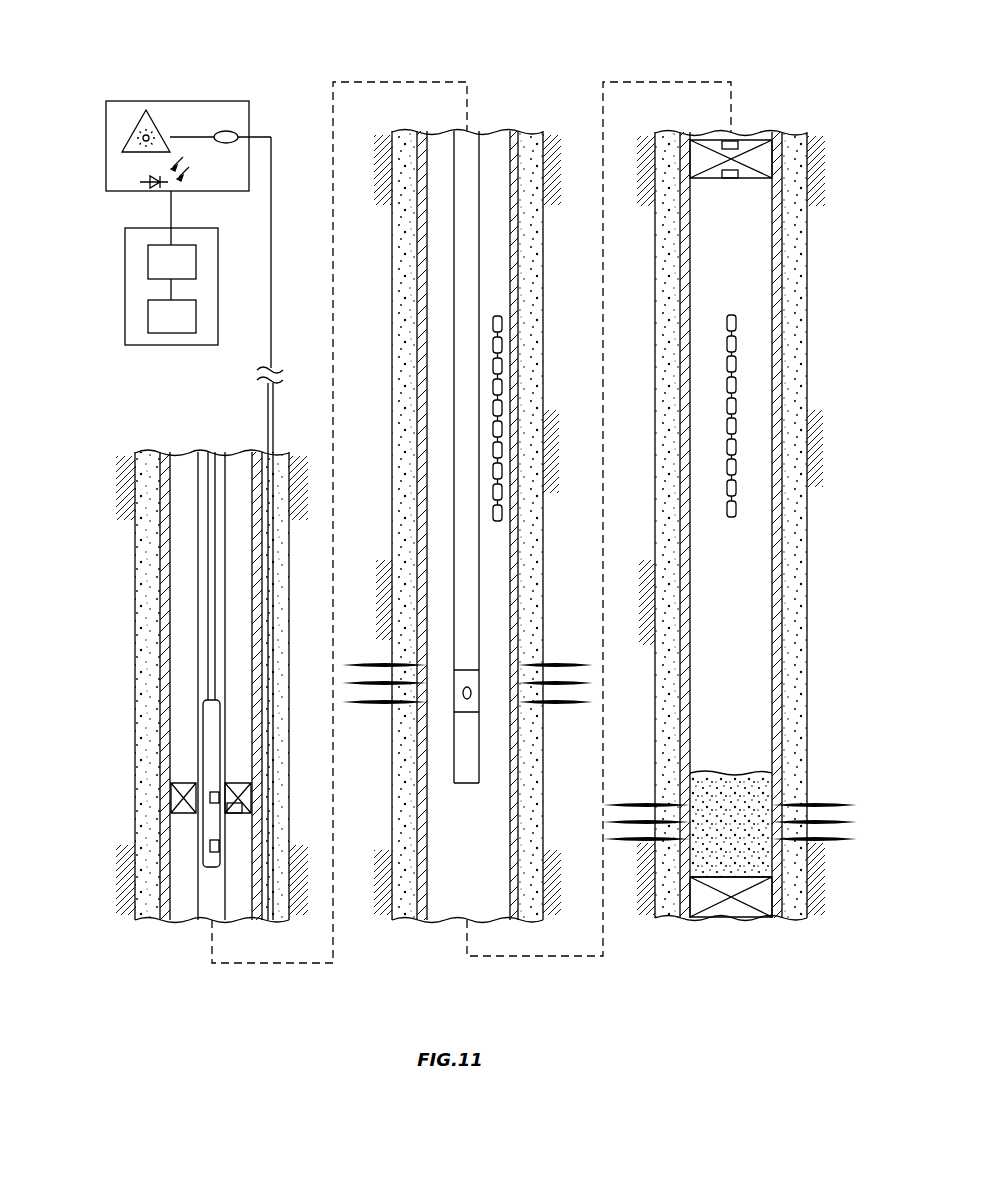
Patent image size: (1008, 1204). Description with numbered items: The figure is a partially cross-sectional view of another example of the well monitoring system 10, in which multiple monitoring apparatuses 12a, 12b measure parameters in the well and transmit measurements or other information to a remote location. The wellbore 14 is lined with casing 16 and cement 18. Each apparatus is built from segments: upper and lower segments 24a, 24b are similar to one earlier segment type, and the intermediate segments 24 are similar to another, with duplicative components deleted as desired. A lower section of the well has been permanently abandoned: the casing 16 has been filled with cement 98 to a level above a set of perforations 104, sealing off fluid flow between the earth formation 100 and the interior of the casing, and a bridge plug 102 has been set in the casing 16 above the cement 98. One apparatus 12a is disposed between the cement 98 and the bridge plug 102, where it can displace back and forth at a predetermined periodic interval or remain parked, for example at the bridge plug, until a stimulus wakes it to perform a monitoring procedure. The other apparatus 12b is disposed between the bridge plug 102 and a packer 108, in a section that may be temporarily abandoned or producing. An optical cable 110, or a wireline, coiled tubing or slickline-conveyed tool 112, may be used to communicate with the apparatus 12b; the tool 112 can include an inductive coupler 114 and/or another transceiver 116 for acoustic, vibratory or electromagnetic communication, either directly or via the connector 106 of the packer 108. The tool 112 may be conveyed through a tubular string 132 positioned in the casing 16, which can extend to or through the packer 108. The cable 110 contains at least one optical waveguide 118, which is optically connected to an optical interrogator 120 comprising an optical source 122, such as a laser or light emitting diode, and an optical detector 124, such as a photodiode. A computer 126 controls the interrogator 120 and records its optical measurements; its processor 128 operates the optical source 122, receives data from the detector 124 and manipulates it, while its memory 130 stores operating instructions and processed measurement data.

The well monitoring system 10 is at (752, 55).
The monitoring apparatus 12a is at (718, 318).
The monitoring apparatus 12b is at (500, 524).
The wellbore 14 is at (797, 620).
The casing 16 is at (785, 662).
The cement 18 is at (807, 707).
The intermediate segment 24 is at (681, 422).
The upper segment 24a is at (502, 323).
The lower segment 24b is at (502, 507).
The cement 98 is at (743, 773).
The earth formation 100 is at (817, 792).
The bridge plug 102 is at (760, 180).
The perforations 104 is at (655, 800).
The connector 106 is at (236, 813).
The packer 108 is at (180, 783).
The optical cable 110 is at (265, 390).
The tool 112 is at (203, 715).
The inductive coupler 114 is at (211, 803).
The transceiver 116 is at (210, 846).
The optical waveguide 118 is at (264, 134).
The optical interrogator 120 is at (190, 202).
The optical source 122 is at (138, 118).
The optical detector 124 is at (152, 188).
The computer 126 is at (140, 294).
The processor 128 is at (148, 257).
The memory 130 is at (148, 312).
The tubular string 132 is at (198, 548).